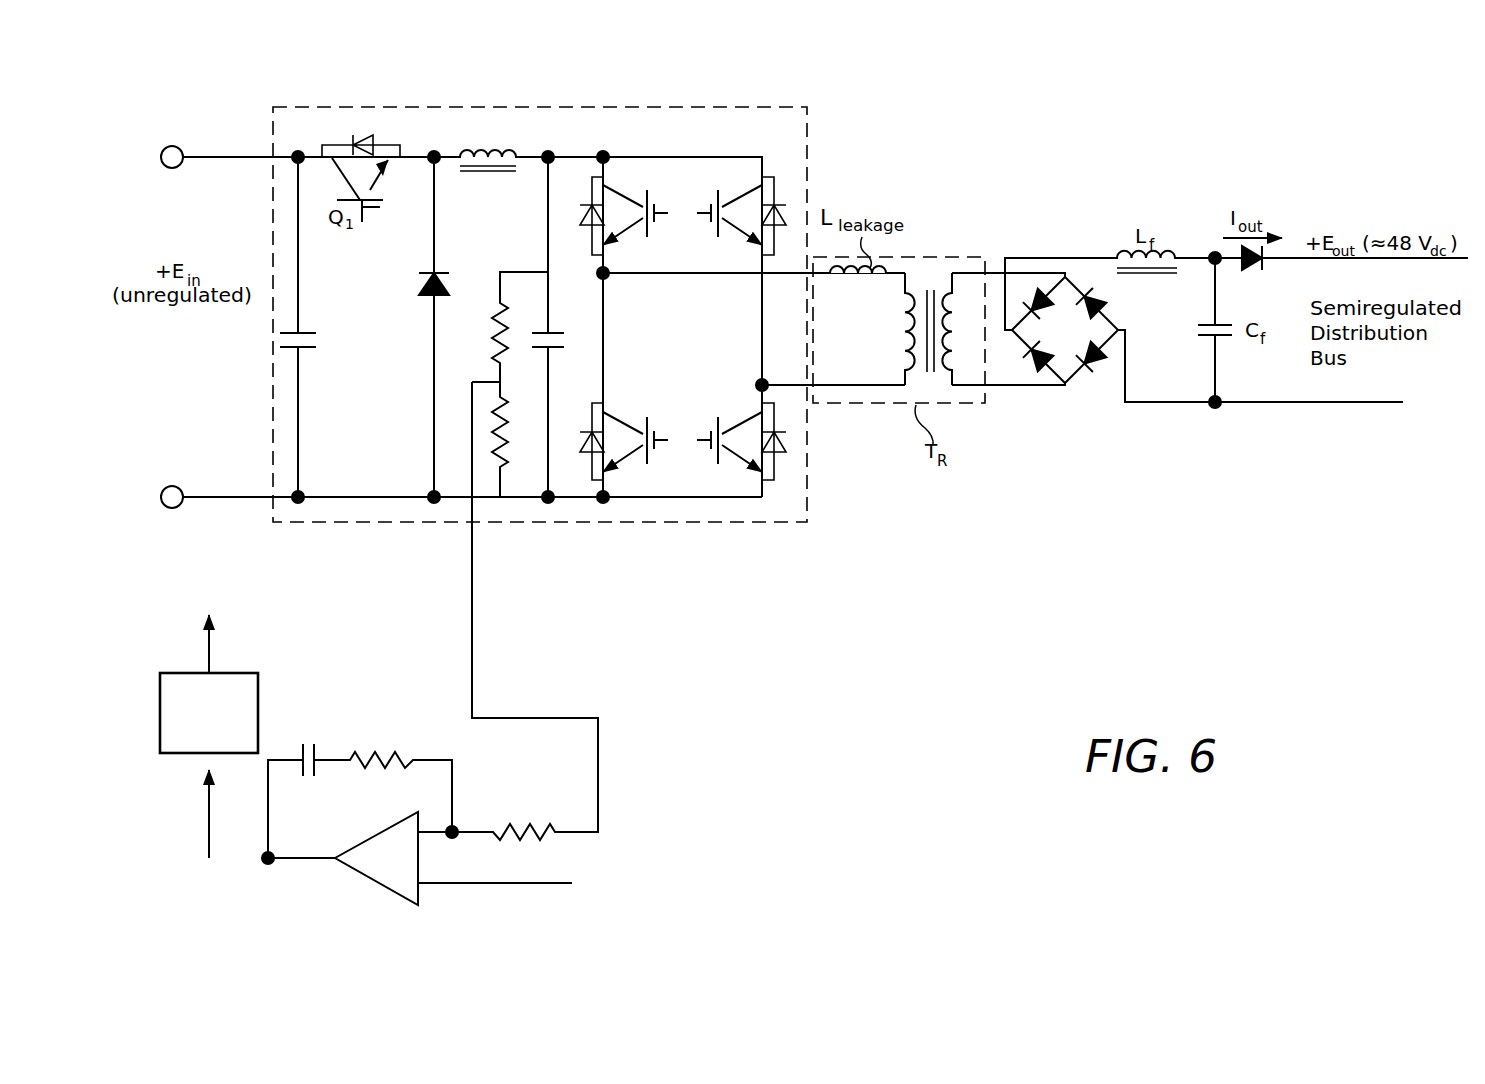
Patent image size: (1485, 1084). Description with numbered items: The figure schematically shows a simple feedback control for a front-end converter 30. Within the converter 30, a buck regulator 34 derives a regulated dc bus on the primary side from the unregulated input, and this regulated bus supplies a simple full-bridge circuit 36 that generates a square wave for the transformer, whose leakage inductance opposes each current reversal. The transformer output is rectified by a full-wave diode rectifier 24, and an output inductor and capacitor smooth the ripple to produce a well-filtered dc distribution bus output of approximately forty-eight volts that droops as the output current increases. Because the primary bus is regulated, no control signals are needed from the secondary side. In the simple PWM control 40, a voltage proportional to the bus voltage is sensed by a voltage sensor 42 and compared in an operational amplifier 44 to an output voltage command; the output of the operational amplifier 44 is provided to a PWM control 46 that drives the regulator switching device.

The converter 30 is at (520, 107).
The buck regulator 34 is at (438, 150).
The full-bridge circuit 36 is at (782, 155).
The full-wave diode rectifier 24 is at (1084, 390).
The voltage sensor 42 is at (512, 458).
The PWM control 40 is at (740, 638).
The operational amplifier 44 is at (352, 872).
The PWM control 46 is at (258, 698).